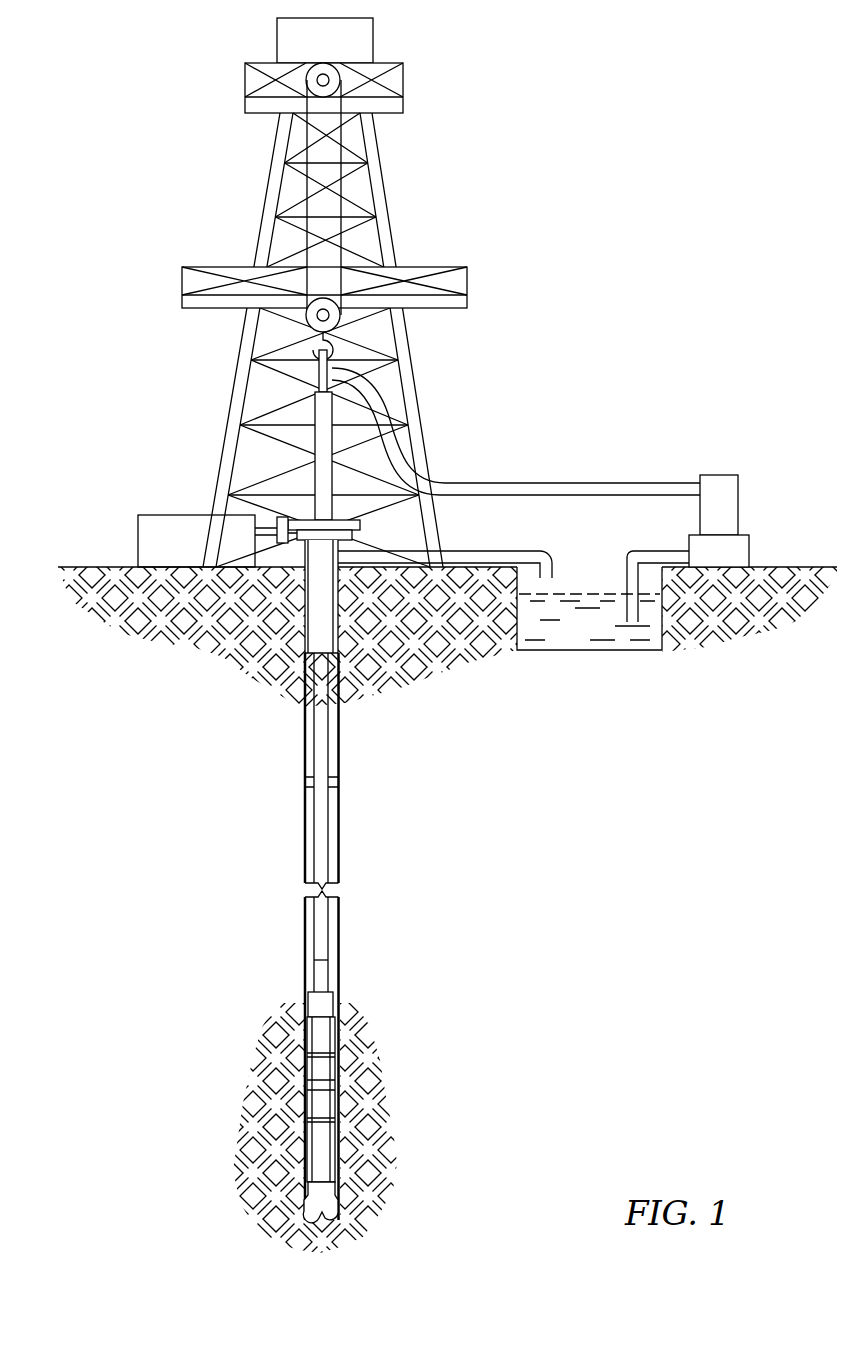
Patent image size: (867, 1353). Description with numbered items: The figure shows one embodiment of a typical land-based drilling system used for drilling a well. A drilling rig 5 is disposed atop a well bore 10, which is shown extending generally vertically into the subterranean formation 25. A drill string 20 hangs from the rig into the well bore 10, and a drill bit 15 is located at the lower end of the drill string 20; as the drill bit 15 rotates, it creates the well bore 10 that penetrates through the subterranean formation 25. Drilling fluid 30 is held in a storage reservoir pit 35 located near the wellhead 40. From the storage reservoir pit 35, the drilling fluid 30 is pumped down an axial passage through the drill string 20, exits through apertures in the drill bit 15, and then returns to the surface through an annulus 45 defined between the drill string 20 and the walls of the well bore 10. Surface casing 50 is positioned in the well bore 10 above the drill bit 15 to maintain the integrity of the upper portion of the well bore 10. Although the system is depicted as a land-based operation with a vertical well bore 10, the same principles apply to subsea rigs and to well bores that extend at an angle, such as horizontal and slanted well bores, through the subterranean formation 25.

The drilling rig 5 is at (462, 202).
The well bore 10 is at (333, 797).
The drill bit 15 is at (310, 1203).
The drill string 20 is at (323, 960).
The subterranean formation 25 is at (379, 1153).
The drilling fluid 30 is at (622, 639).
The storage reservoir pit 35 is at (582, 651).
The wellhead 40 is at (465, 537).
The annulus 45 is at (306, 918).
The surface casing 50 is at (311, 636).